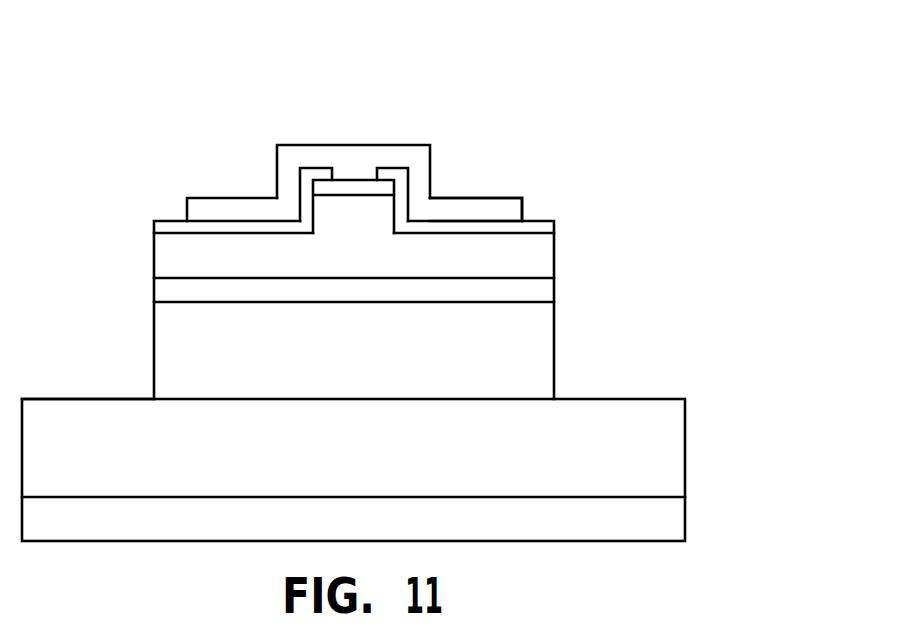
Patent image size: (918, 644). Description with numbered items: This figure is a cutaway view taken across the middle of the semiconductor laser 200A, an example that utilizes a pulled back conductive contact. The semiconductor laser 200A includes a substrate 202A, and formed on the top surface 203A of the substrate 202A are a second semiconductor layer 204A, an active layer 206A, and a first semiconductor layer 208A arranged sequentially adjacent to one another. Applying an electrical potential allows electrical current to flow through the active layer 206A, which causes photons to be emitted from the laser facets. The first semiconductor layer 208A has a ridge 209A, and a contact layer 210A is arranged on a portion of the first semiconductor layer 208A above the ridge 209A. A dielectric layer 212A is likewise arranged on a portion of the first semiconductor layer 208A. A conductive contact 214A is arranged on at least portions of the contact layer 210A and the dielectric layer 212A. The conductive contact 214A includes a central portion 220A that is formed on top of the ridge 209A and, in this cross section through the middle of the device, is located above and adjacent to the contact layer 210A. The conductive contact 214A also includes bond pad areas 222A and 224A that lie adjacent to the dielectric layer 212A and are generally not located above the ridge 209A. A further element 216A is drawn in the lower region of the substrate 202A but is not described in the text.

The semiconductor laser 200A is at (535, 68).
The substrate 202A is at (660, 452).
The top surface 203A is at (70, 398).
The second semiconductor layer 204A is at (523, 372).
The active layer 206A is at (540, 290).
The first semiconductor layer 208A is at (535, 260).
The ridge 209A is at (335, 212).
The contact layer 210A is at (343, 187).
The dielectric layer 212A is at (542, 227).
The conductive contact 214A is at (508, 210).
The bottom layer of substrate 216A is at (672, 522).
The central portion 220A is at (295, 145).
The bond pad area 222A is at (192, 196).
The bond pad area 224A is at (463, 198).